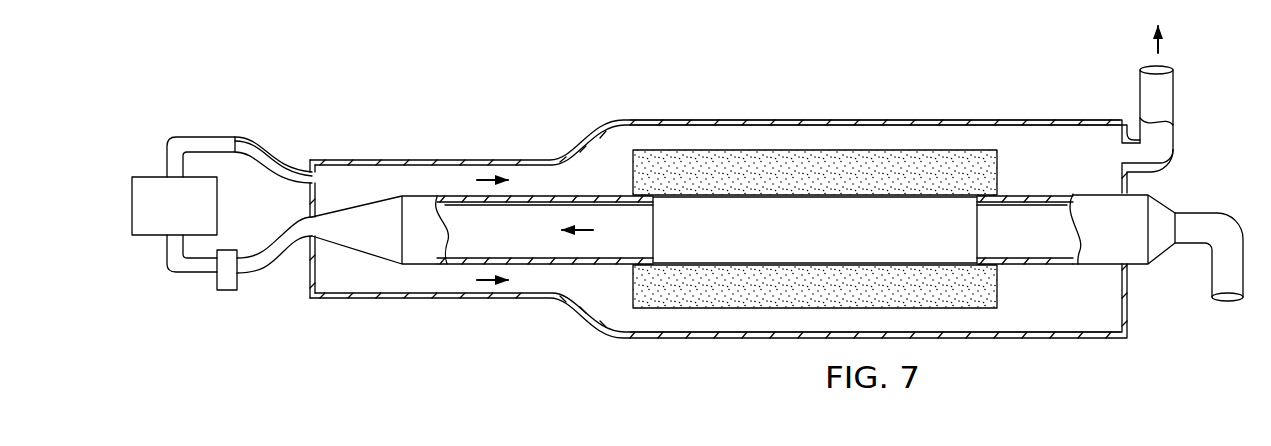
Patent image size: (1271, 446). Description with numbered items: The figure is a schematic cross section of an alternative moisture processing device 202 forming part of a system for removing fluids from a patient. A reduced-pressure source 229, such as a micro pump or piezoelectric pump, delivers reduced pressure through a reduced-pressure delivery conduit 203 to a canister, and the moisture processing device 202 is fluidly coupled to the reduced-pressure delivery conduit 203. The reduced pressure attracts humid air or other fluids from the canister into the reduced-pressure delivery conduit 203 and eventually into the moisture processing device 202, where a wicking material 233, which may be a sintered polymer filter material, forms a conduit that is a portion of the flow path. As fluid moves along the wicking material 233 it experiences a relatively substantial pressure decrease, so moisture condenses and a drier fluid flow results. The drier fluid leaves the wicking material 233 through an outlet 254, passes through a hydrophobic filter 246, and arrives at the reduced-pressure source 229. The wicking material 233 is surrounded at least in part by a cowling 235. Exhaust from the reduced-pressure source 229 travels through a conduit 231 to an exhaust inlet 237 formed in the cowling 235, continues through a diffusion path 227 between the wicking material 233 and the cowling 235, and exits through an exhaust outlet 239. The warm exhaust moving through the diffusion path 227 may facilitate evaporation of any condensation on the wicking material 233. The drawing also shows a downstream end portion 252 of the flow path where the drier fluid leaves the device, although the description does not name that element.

The moisture processing device 202 is at (670, 118).
The reduced-pressure delivery conduit 203 is at (193, 277).
The diffusion path 227 is at (889, 136).
The reduced-pressure source 229 is at (143, 176).
The conduit 231 is at (208, 134).
The wicking material 233 is at (998, 168).
The cowling 235 is at (796, 123).
The exhaust inlet 237 is at (297, 167).
The exhaust outlet 239 is at (1176, 92).
The hydrophobic filter 246 is at (227, 293).
The outlet cone 252 is at (1130, 265).
The outlet 254 is at (342, 248).